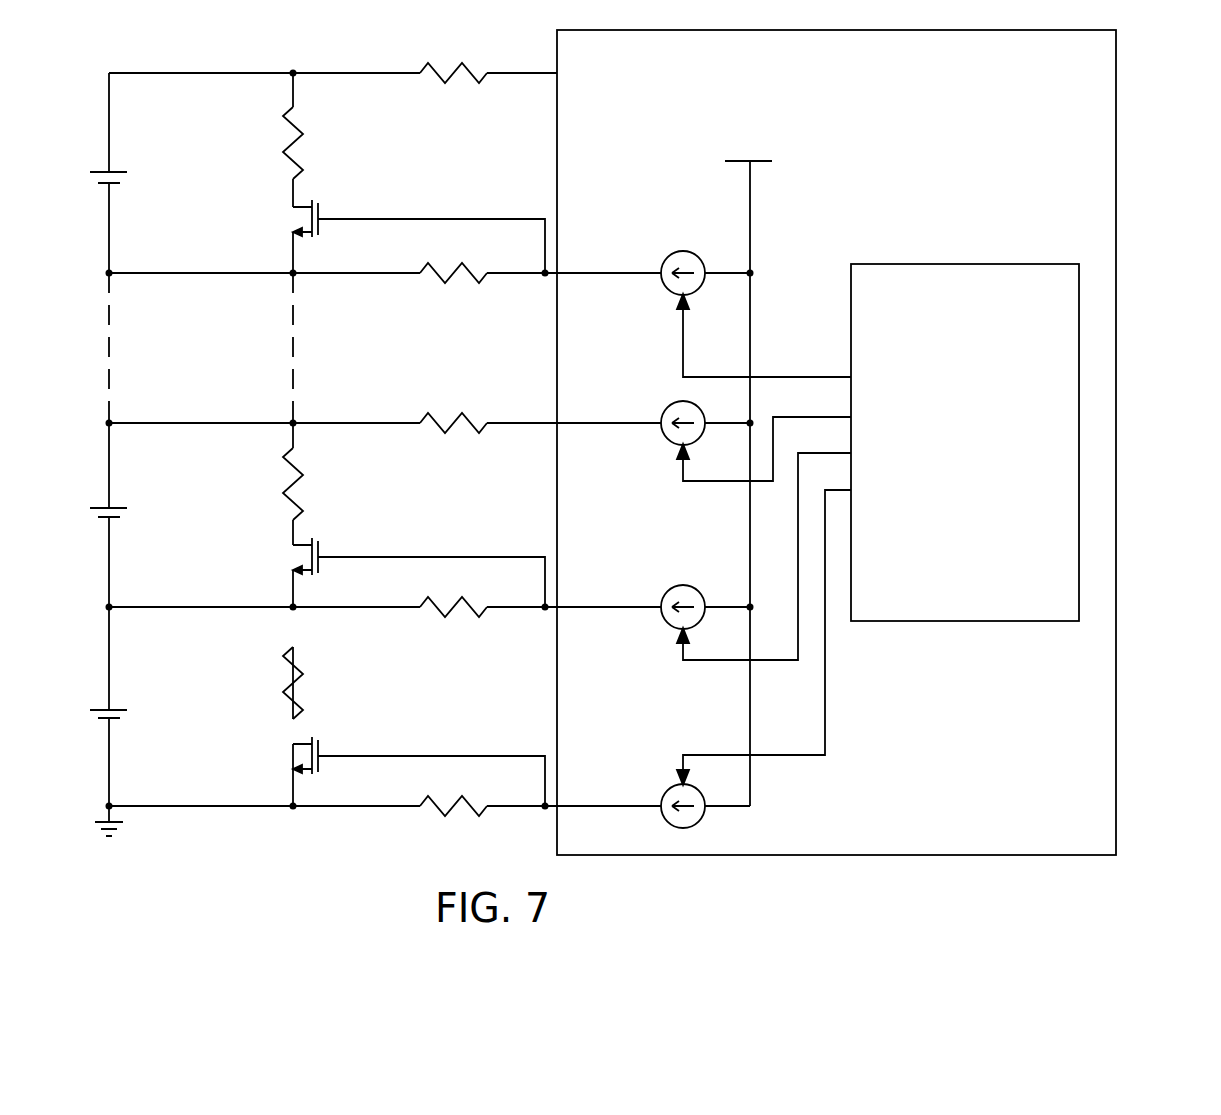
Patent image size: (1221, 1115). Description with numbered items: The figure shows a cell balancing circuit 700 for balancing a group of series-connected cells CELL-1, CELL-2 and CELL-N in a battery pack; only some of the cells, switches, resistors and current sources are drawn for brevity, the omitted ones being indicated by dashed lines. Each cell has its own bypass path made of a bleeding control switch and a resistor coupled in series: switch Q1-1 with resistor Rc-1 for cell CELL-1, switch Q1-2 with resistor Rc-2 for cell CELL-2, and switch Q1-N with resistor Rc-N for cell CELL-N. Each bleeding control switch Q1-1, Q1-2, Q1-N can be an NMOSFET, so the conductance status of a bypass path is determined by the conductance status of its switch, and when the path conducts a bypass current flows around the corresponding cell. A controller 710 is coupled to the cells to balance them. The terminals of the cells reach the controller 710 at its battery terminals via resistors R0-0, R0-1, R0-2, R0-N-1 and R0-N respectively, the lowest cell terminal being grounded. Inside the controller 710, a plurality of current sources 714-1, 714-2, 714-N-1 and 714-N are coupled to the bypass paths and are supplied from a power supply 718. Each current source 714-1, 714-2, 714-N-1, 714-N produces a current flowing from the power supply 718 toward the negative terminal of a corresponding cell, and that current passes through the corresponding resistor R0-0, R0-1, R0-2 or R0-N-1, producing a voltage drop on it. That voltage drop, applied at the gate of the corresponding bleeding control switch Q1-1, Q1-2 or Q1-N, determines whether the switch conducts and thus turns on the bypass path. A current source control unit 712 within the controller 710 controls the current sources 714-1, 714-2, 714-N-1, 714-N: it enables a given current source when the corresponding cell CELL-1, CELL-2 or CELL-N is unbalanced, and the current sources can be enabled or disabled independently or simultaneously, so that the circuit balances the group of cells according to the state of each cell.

The battery charging system 700 is at (1157, 835).
The controller 710 is at (1116, 103).
The current source control unit 712 is at (957, 262).
The current source 714-N is at (668, 252).
The current source 714-N-1 is at (668, 402).
The current source 714-2 is at (670, 586).
The current source 714-1 is at (678, 784).
The power supply Vcc 718 is at (757, 162).
The cell CELL-N is at (117, 172).
The cell CELL-2 is at (120, 508).
The cell CELL-1 is at (120, 710).
The resistor Rc-N is at (303, 122).
The resistor Rc-2 is at (303, 477).
The resistor Rc-1 is at (303, 675).
The resistor R0-N is at (477, 87).
The resistor R0-N-1 is at (477, 287).
The resistor R0-2 is at (477, 437).
The resistor R0-1 is at (477, 621).
The resistor R0-0 is at (482, 815).
The bleeding control switch Q1-N is at (317, 212).
The bleeding control switch Q1-2 is at (322, 547).
The bleeding control switch Q1-1 is at (322, 745).